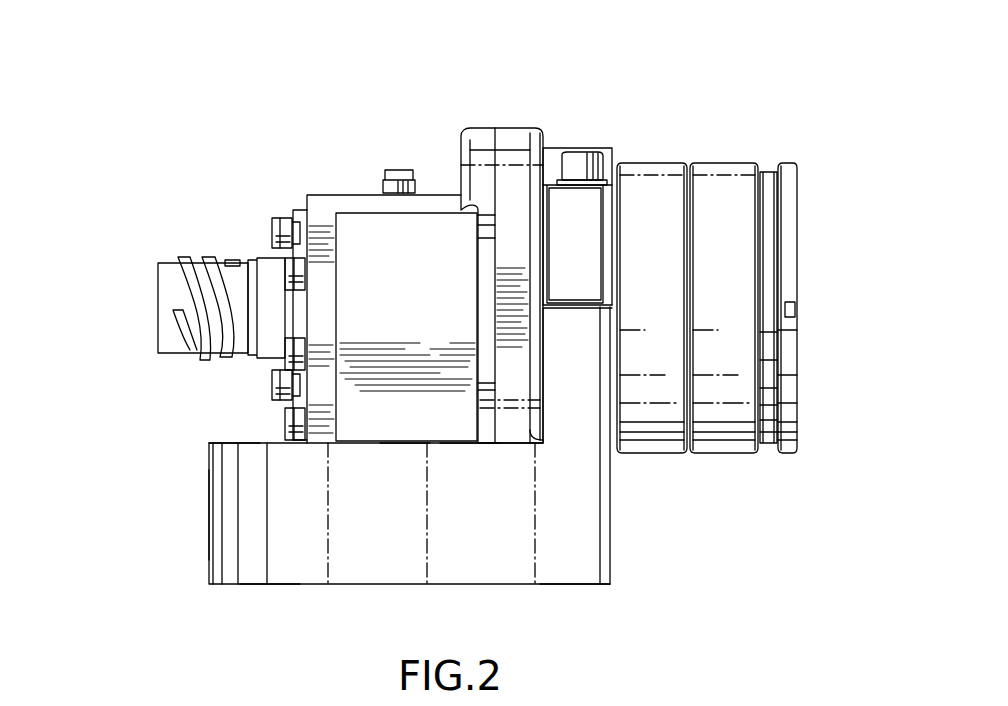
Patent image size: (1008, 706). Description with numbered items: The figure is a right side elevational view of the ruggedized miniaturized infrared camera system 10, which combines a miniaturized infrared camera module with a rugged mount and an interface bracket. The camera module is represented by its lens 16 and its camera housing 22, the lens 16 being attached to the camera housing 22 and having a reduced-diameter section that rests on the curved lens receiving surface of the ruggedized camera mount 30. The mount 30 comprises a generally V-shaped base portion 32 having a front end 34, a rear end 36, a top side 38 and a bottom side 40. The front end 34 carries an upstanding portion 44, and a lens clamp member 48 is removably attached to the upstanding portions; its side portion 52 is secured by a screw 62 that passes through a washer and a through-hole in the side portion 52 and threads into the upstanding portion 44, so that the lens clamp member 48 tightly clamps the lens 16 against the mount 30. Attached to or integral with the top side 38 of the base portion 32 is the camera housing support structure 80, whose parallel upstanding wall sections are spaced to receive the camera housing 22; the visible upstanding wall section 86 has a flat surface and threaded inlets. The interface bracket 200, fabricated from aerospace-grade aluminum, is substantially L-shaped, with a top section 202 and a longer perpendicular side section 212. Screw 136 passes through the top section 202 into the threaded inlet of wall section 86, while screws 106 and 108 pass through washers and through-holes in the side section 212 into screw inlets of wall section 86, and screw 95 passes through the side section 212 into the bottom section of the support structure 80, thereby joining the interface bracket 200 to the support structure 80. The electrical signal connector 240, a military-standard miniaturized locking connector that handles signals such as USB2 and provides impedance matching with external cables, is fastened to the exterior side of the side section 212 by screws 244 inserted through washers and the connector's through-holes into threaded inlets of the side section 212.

The ruggedized miniaturized infrared camera system 10 is at (798, 108).
The lens 16 is at (725, 166).
The camera housing 22 is at (506, 128).
The ruggedized camera mount 30 is at (619, 506).
The base portion 32 is at (353, 591).
The front end 34 is at (619, 575).
The rear end 36 is at (206, 544).
The top side 38 is at (212, 437).
The bottom side 40 is at (278, 591).
The upstanding portion 44 is at (575, 359).
The lens clamp member 48 is at (550, 150).
The side portion 52 is at (584, 234).
The screw 62 is at (584, 166).
The camera housing support structure 80 is at (456, 425).
The upstanding wall section 86 is at (409, 425).
The screw 95 is at (288, 428).
The screw 106 is at (288, 278).
The screw 108 is at (288, 353).
The screw 136 is at (400, 178).
The interface bracket 200 is at (306, 194).
The top section 202 is at (338, 191).
The side section 212 is at (331, 322).
The electrical signal connector 240 is at (159, 275).
The screws 244 is at (269, 238).